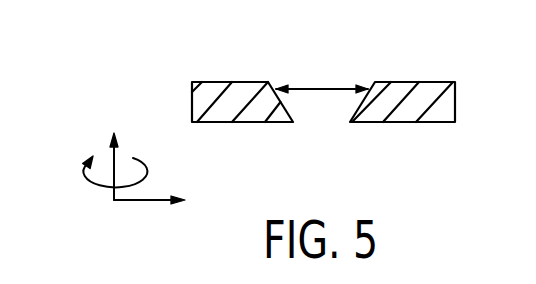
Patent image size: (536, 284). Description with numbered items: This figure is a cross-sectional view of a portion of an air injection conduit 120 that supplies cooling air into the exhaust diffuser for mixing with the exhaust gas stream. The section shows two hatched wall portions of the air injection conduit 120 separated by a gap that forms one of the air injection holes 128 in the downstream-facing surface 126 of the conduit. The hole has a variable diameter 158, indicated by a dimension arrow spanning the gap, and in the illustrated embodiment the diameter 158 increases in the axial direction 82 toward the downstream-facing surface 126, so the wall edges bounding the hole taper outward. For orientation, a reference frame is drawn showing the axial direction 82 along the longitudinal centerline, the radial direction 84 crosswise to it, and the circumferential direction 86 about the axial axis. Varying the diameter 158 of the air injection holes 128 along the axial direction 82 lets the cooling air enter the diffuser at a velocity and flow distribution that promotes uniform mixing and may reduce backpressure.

The air injection conduit 120 is at (158, 49).
The downstream-facing surface 126 is at (232, 82).
The air injection hole 128 is at (322, 128).
The variable diameter 158 is at (322, 89).
The axial direction 82 is at (115, 177).
The radial direction 84 is at (142, 202).
The circumferential direction 86 is at (95, 188).